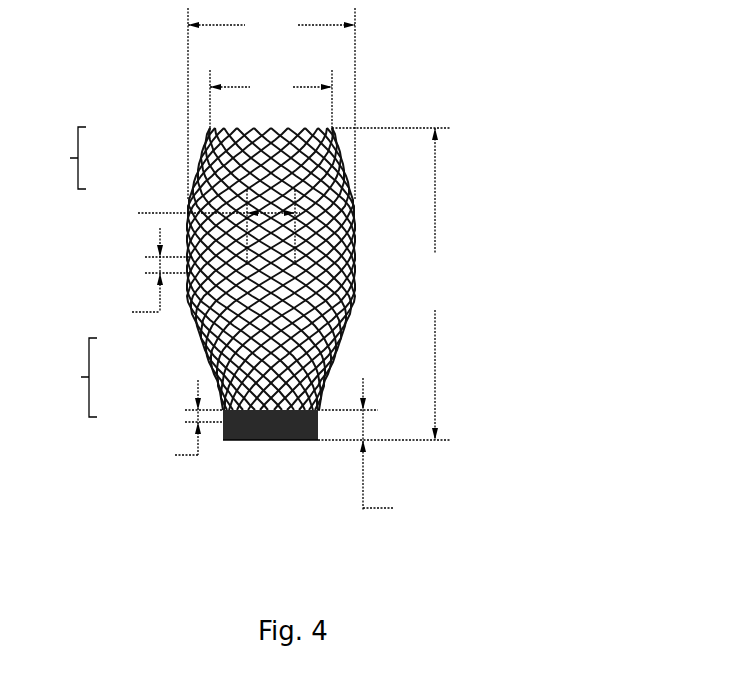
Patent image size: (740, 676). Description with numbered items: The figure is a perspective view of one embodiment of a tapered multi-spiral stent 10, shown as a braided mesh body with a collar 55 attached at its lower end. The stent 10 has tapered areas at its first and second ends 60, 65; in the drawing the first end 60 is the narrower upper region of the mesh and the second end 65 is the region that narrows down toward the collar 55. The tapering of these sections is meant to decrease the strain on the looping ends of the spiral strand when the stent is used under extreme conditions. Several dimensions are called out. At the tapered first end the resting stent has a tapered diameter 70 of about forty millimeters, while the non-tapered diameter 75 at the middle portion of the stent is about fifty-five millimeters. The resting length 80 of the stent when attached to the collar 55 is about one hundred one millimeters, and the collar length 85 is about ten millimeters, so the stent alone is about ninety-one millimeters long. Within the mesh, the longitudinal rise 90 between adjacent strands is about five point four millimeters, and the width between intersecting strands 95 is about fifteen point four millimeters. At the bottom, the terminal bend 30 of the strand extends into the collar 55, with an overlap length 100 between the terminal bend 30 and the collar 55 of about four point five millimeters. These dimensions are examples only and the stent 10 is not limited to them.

The multi-spiral stent 10 is at (514, 123).
The terminal bend 30 is at (268, 423).
The collar 55 is at (307, 441).
The first end 60 is at (54, 158).
The second end 65 is at (62, 377).
The tapered diameter 70 is at (271, 99).
The non-tapered diameter 75 is at (271, 104).
The resting length 80 is at (384, 284).
The collar length 85 is at (378, 444).
The longitudinal rise 90 is at (136, 273).
The width between intersecting strands 95 is at (197, 227).
The overlap length 100 is at (165, 421).